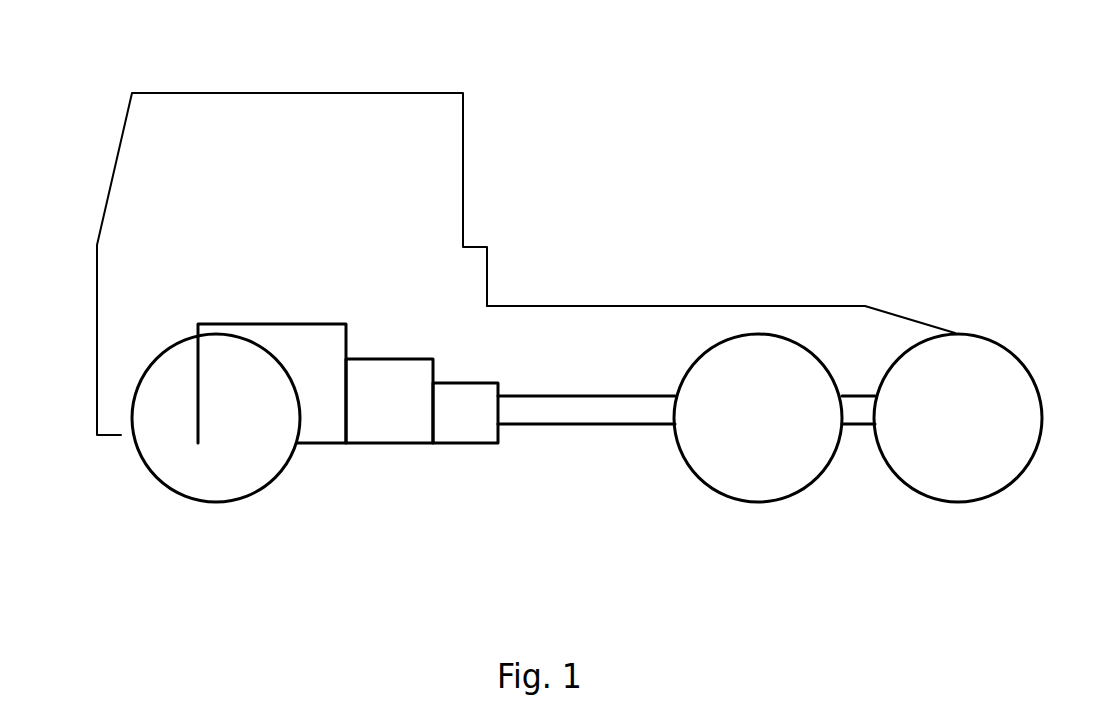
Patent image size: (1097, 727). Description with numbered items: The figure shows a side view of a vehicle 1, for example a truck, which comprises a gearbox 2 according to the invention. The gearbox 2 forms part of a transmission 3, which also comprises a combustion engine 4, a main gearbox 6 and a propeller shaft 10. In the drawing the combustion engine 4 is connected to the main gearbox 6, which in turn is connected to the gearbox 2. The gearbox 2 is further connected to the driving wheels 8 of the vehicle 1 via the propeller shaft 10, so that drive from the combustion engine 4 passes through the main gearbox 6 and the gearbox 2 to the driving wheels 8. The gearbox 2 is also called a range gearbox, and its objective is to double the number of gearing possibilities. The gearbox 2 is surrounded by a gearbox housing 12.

The vehicle 1 is at (569, 75).
The gearbox 2 is at (465, 382).
The transmission 3 is at (392, 503).
The combustion engine 4 is at (243, 323).
The main gearbox 6 is at (390, 358).
The driving wheels 8 is at (807, 488).
The propeller shaft 10 is at (588, 425).
The gearbox housing 12 is at (470, 443).